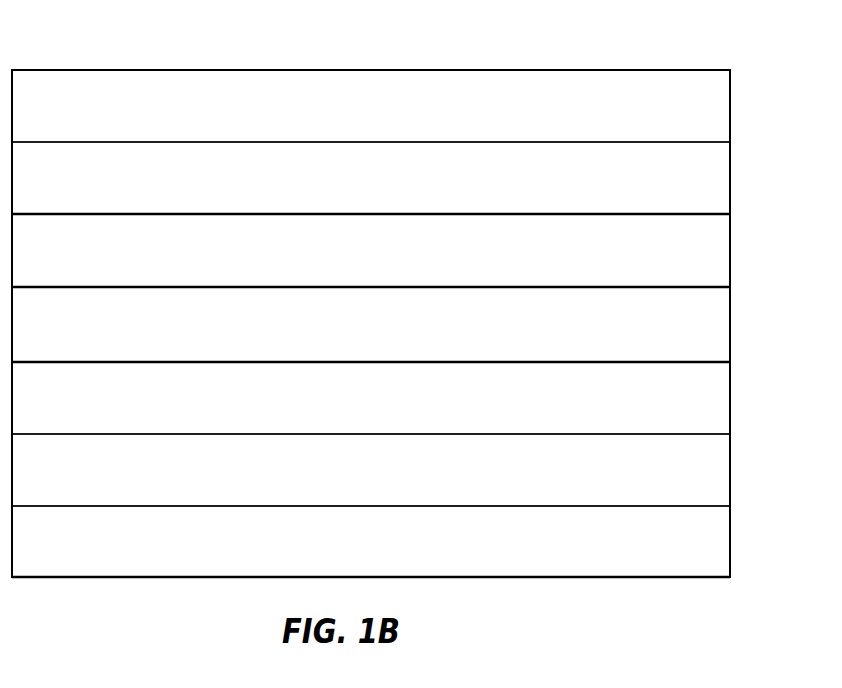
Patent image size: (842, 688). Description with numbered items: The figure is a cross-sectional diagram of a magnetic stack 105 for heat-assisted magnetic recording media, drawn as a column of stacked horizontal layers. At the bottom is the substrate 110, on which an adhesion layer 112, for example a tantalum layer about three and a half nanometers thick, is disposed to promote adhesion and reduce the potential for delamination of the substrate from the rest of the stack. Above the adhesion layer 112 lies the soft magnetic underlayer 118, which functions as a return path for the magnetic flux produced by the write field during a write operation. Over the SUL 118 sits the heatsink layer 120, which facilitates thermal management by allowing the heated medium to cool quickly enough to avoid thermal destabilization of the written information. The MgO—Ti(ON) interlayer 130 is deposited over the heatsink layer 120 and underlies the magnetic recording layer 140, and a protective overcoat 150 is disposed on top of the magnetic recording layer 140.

The magnetic stack 105 is at (649, 50).
The overcoat 150 is at (717, 123).
The magnetic recording layer 140 is at (720, 185).
The interlayer 130 is at (722, 257).
The heatsink layer 120 is at (719, 337).
The soft magnetic underlayer 118 is at (707, 412).
The adhesion layer 112 is at (710, 485).
The substrate 110 is at (716, 533).